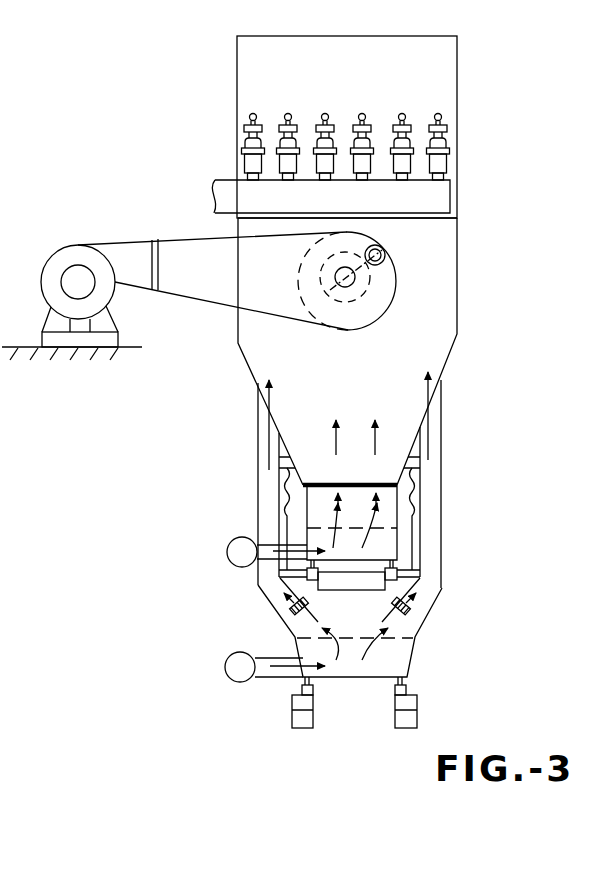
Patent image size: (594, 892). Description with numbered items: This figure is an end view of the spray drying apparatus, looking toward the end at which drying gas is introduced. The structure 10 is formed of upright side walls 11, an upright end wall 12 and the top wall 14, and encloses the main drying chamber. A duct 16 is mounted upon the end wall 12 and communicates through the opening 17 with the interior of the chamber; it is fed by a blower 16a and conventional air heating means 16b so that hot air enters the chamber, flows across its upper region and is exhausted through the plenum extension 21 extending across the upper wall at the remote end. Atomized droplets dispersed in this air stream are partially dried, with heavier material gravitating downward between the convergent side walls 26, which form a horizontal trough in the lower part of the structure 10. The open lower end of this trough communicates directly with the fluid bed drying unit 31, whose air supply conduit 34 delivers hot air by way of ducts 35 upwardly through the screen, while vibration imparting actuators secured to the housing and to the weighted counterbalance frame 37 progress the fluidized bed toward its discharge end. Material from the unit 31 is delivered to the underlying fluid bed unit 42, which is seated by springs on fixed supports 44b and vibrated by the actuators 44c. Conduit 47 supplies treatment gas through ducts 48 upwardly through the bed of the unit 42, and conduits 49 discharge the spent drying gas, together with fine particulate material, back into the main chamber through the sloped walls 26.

The structure 10 is at (470, 243).
The upright side walls 11 is at (459, 277).
The upright end wall 12 is at (420, 326).
The top wall 14 is at (450, 213).
The duct 16 is at (360, 318).
The blower 16a is at (70, 244).
The air heating means 16b is at (155, 277).
The opening 17 is at (398, 279).
The plenum extension 21 is at (232, 76).
The convergent side walls 26 is at (250, 368).
The drying unit 31 is at (385, 551).
The air supply conduit 34 is at (228, 549).
The ducts 35 is at (258, 566).
The weighted counterbalance frame 37 is at (346, 586).
The underlying unit 42 is at (421, 628).
The fixed supports 44b is at (315, 720).
The actuators 44c is at (313, 692).
The conduit 47 is at (226, 665).
The ducts 48 is at (268, 682).
The conduits 49 is at (258, 492).